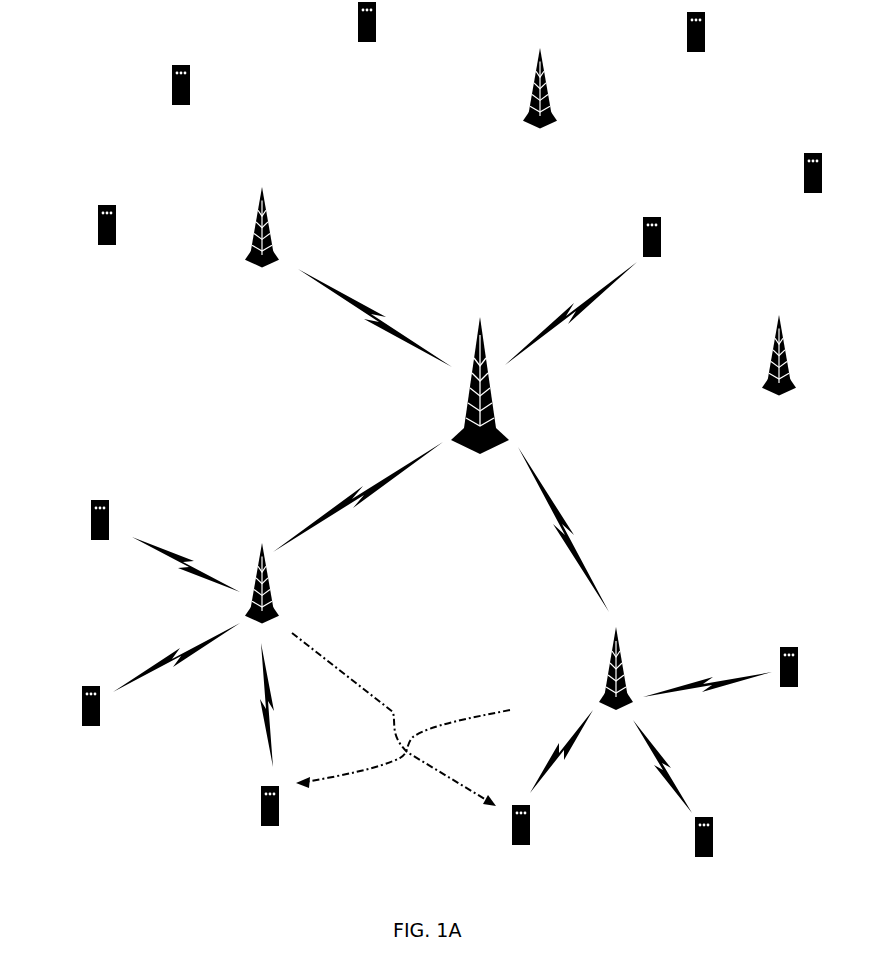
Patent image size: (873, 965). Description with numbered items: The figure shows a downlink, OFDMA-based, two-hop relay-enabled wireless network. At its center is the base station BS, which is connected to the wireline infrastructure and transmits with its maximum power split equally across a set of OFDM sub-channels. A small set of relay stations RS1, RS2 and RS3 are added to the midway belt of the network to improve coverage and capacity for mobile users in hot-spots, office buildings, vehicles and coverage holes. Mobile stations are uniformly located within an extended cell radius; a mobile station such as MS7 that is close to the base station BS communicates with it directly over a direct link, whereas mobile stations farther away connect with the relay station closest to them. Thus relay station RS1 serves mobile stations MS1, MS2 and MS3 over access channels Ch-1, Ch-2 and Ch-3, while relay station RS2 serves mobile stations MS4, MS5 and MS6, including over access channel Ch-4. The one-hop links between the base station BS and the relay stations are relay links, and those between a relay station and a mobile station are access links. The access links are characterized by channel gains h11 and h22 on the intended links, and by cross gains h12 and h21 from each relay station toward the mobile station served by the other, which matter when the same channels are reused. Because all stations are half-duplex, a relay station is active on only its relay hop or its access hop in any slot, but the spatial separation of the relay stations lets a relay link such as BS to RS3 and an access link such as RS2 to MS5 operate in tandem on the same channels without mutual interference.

The base station BS is at (478, 358).
The relay station RS1 is at (270, 563).
The relay station RS2 is at (640, 659).
The relay station RS3 is at (238, 251).
The mobile station MS1 is at (278, 828).
The mobile station MS2 is at (61, 706).
The mobile station MS3 is at (71, 519).
The mobile station MS4 is at (516, 852).
The mobile station MS5 is at (717, 859).
The mobile station MS6 is at (806, 690).
The mobile station MS7 is at (685, 239).
The channel Ch-1 is at (238, 705).
The channel Ch-2 is at (172, 657).
The channel Ch-3 is at (186, 557).
The channel Ch-4 is at (628, 766).
The channel gain h11 is at (291, 691).
The channel gain h12 is at (394, 719).
The channel gain h21 is at (405, 733).
The channel gain h22 is at (552, 751).